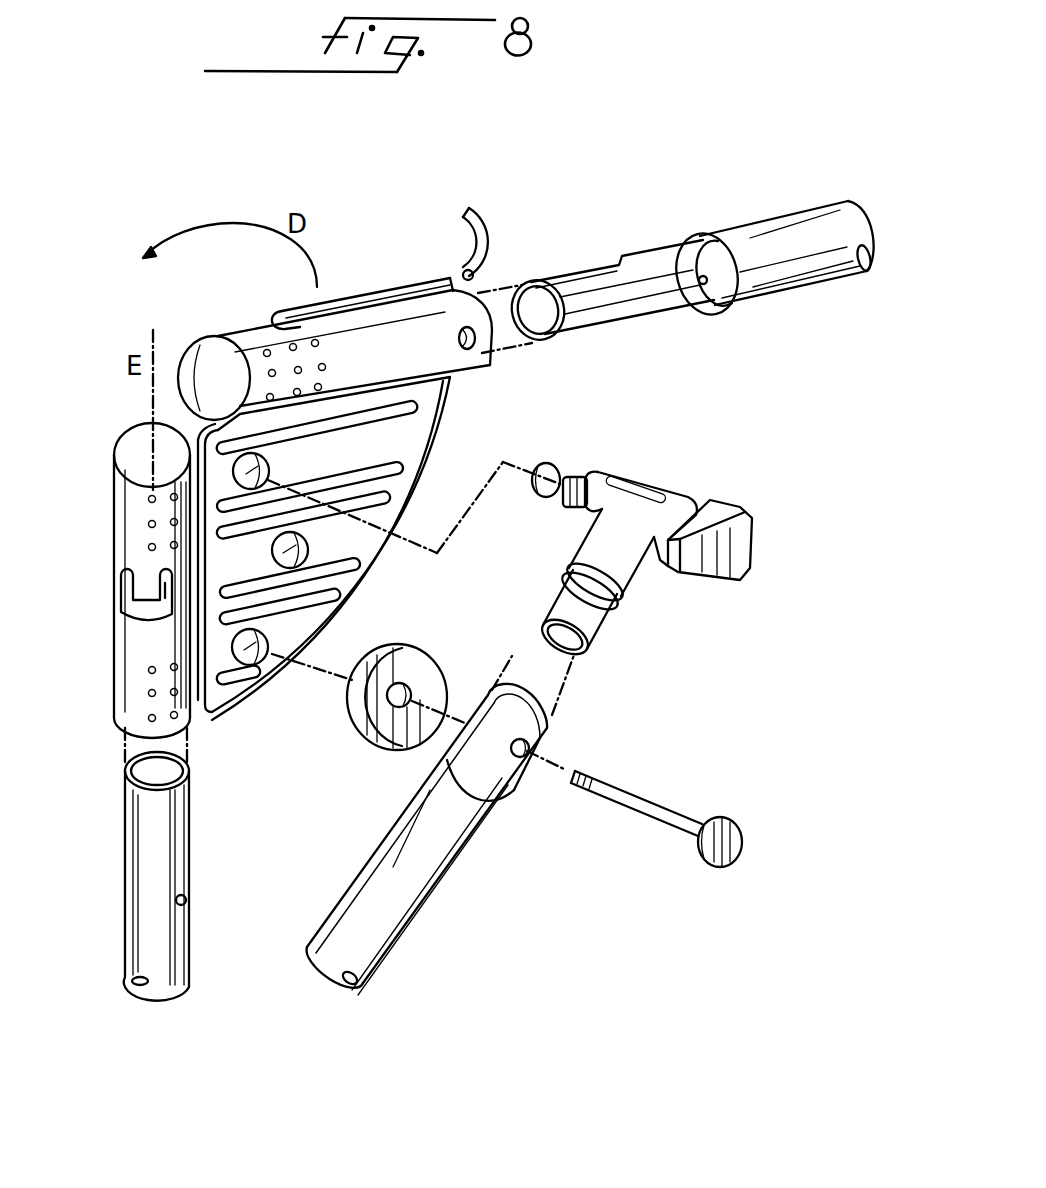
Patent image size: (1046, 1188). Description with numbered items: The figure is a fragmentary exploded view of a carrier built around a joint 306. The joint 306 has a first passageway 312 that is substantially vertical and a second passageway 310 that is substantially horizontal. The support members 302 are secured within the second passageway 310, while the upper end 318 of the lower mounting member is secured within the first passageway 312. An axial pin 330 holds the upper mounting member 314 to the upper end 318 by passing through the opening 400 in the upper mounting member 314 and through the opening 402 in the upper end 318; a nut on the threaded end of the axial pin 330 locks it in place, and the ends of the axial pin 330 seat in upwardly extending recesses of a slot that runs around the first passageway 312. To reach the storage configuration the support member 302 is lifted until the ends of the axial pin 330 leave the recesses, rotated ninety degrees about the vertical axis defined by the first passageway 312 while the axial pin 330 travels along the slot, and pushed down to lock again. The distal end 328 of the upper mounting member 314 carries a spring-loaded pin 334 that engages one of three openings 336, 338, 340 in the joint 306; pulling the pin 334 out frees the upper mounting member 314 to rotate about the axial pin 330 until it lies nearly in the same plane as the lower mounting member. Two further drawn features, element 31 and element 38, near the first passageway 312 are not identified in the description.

The support member 302 is at (758, 225).
The second passageway 310 is at (497, 305).
The joint 306 is at (190, 337).
The first passageway 312 is at (132, 747).
The retaining clip 31 is at (118, 597).
The detent pin 38 is at (167, 595).
The opening 336 is at (447, 398).
The opening 338 is at (303, 557).
The opening 340 is at (262, 657).
The spring-loaded pin 334 is at (590, 475).
The distal end 328 is at (662, 566).
The upper mounting member 314 is at (393, 927).
The opening 400 is at (533, 762).
The axial pin 330 is at (663, 813).
The upper end 318 is at (140, 863).
The opening 402 is at (186, 900).